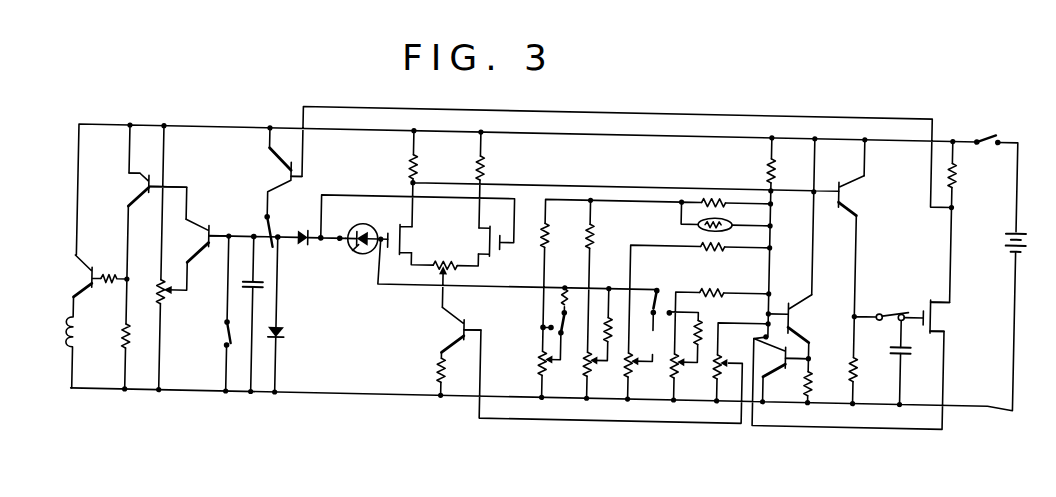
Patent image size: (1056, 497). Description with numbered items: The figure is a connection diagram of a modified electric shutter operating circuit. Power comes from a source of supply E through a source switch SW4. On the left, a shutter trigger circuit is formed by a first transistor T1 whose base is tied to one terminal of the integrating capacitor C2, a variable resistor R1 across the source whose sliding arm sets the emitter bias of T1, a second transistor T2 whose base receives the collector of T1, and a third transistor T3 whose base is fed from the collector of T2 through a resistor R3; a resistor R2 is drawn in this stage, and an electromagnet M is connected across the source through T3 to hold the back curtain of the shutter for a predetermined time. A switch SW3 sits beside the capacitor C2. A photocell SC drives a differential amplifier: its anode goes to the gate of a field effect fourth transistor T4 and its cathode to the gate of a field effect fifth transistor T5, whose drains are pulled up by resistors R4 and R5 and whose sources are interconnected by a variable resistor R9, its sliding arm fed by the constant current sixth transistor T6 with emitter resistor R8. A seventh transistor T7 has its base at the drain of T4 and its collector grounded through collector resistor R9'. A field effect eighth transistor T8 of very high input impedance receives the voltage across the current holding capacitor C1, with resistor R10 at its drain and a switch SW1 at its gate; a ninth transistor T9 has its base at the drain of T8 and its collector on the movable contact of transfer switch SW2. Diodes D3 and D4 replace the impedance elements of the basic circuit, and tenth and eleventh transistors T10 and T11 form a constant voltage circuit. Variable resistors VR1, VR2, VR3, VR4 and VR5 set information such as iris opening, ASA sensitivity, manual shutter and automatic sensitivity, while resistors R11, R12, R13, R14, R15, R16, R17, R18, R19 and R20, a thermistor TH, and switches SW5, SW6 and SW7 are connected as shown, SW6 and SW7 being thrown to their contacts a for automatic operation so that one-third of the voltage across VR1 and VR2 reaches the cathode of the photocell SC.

The first transistor T1 is at (207, 232).
The second transistor T2 is at (150, 190).
The third transistor T3 is at (89, 279).
The fourth transistor T4 is at (409, 242).
The fifth transistor T5 is at (483, 239).
The sixth transistor T6 is at (453, 321).
The seventh transistor T7 is at (855, 178).
The eighth transistor T8 is at (944, 305).
The ninth transistor T9 is at (276, 172).
The tenth transistor T10 is at (806, 304).
The eleventh transistor T11 is at (786, 357).
The variable resistor R1 is at (170, 296).
The resistor R2 is at (125, 335).
The resistor R3 is at (112, 286).
The resistor R4 is at (426, 167).
The resistor R5 is at (493, 167).
The resistor R8 is at (438, 357).
The variable resistor R9 is at (446, 254).
The collector resistor R9' is at (867, 370).
The resistor R10 is at (968, 177).
The resistor R11 is at (560, 238).
The resistor R12 is at (566, 279).
The resistor R13 is at (605, 238).
The resistor R14 is at (615, 306).
The resistor R15 is at (728, 199).
The resistor R16 is at (716, 263).
The resistor R17 is at (725, 284).
The resistor R18 is at (708, 318).
The resistor R19 is at (788, 171).
The resistor R20 is at (825, 383).
The variable resistor VR1 is at (557, 372).
The variable resistor VR2 is at (603, 372).
The variable resistor VR3 is at (645, 373).
The variable resistor VR4 is at (690, 374).
The variable resistor VR5 is at (727, 347).
The switch SW1 is at (891, 301).
The transfer switch SW2 is at (282, 221).
The switch SW3 is at (230, 332).
The source switch SW4 is at (978, 99).
The switch SW5 is at (334, 241).
The switch SW6 is at (546, 318).
The switch SW7 is at (664, 278).
The current holding capacitor C1 is at (913, 359).
The integrating capacitor C2 is at (267, 284).
The diode D3 is at (303, 254).
The diode D4 is at (289, 340).
The photocell SC is at (361, 225).
The thermistor TH is at (731, 217).
The electromagnet M is at (67, 342).
The source of supply E is at (1028, 214).